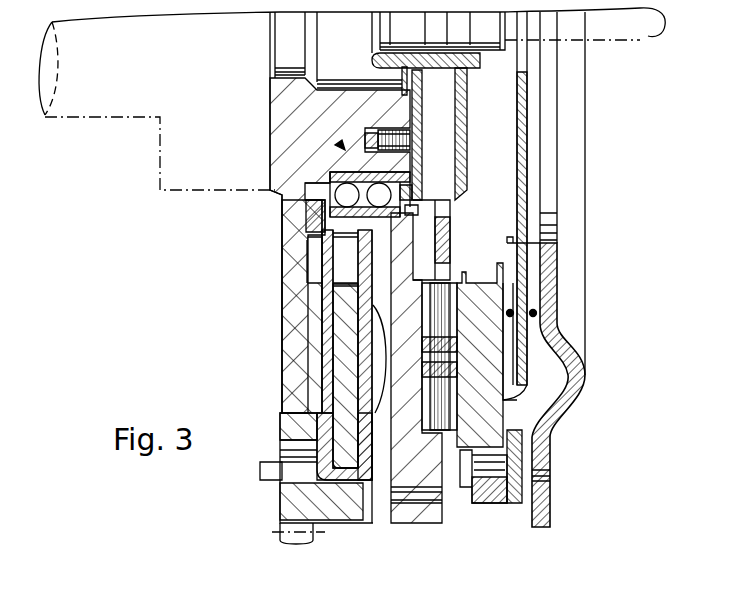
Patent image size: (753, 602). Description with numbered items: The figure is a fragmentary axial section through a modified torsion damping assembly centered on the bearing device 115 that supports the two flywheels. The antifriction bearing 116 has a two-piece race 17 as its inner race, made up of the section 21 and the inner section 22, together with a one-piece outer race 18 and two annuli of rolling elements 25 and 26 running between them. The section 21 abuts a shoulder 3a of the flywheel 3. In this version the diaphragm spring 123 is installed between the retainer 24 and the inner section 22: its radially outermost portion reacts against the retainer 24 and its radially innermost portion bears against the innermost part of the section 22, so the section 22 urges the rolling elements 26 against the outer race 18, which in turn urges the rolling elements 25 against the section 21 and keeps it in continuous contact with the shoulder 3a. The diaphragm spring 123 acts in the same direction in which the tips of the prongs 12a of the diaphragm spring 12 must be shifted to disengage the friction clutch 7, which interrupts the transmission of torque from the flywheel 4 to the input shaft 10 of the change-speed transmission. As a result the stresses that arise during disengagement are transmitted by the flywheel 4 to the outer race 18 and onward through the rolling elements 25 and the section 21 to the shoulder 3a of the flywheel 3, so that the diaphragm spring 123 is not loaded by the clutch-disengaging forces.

The input shaft 10 is at (628, 32).
The flywheel 3 is at (283, 248).
The shoulder 3a is at (305, 185).
The retainer 24 is at (456, 108).
The inner section of the two-piece race 22 is at (410, 155).
The section of the race 21 is at (357, 198).
The two-piece race 17 is at (219, 128).
The bearing device 115 is at (340, 146).
The annulus of rolling elements 25 is at (322, 205).
The diaphragm spring 123 is at (425, 188).
The annulus of rolling elements 26 is at (420, 214).
The antifriction bearing 116 is at (283, 293).
The one-piece outer race 18 is at (379, 376).
The flywheel 4 is at (398, 252).
The prongs 12a is at (512, 122).
The diaphragm spring 12 is at (538, 364).
The friction clutch 7 is at (572, 437).